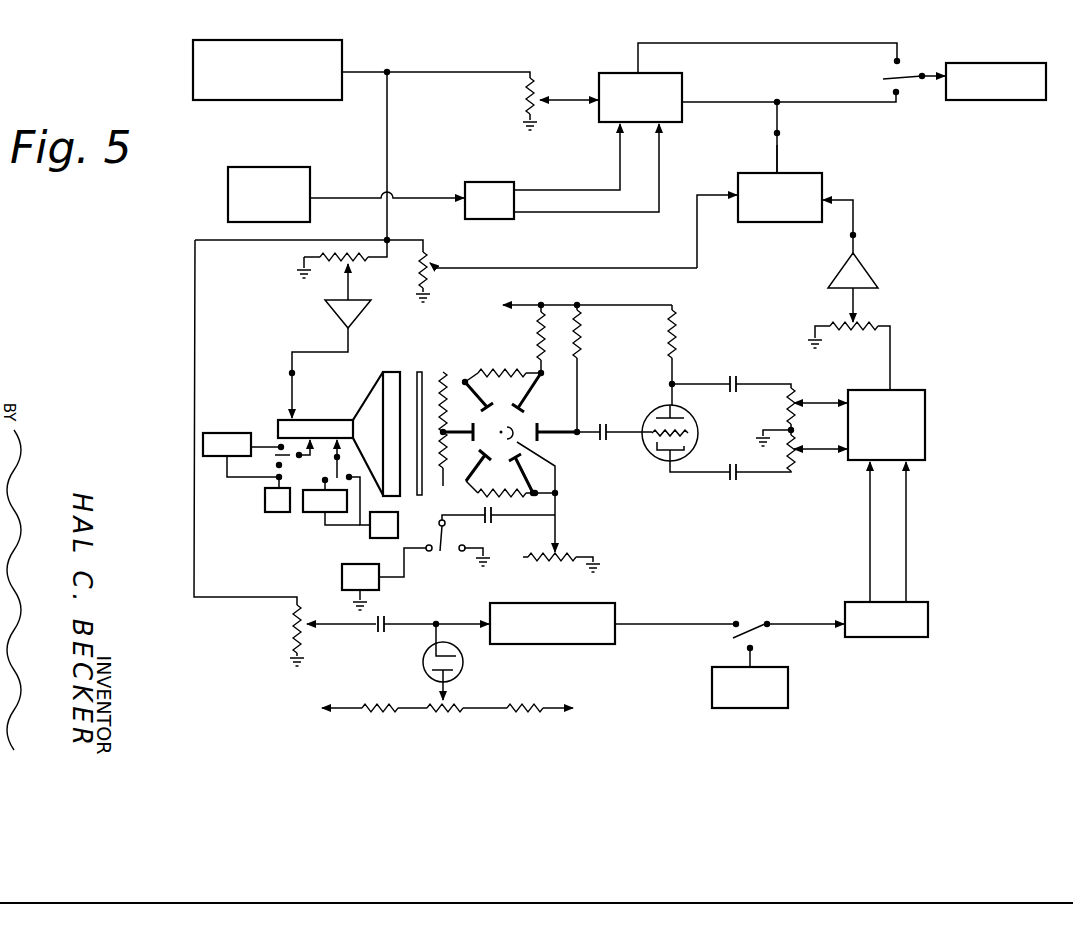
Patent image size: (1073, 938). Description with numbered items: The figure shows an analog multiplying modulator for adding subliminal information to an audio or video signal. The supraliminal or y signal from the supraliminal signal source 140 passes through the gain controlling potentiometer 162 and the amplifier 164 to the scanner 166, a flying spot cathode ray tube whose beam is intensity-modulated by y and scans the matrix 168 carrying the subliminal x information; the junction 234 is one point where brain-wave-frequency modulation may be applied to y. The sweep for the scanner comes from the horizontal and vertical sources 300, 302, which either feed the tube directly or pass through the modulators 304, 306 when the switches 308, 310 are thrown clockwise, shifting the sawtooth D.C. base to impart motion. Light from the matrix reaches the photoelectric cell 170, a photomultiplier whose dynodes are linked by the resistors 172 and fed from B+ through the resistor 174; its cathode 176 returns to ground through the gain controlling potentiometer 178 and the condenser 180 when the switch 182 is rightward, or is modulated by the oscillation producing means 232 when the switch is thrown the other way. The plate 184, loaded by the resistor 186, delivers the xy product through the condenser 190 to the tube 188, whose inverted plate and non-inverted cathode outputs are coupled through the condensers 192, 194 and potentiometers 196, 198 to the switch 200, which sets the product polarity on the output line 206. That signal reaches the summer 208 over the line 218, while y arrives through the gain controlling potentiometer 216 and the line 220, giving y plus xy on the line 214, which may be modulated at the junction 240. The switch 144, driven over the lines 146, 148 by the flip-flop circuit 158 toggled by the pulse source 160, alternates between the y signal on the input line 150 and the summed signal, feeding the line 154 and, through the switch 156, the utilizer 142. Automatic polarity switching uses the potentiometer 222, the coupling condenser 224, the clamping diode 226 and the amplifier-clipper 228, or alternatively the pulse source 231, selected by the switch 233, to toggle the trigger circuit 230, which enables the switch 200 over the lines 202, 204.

The supraliminal signal source 140 is at (306, 44).
The utilizer 142 is at (1008, 63).
The switch 144 is at (665, 73).
The line 146 is at (619, 166).
The line 148 is at (661, 171).
The input line 150 is at (566, 98).
The line 154 is at (807, 43).
The switch 156 is at (909, 70).
The flip-flop circuit 158 is at (507, 172).
The pulse source 160 is at (315, 162).
The gain controlling potentiometer 162 is at (292, 265).
The amplifier 164 is at (352, 318).
The scanner 166 is at (360, 406).
The matrix 168 is at (424, 371).
The photoelectric cell 170 is at (499, 353).
The resistor 172 is at (446, 395).
The resistor 174 is at (545, 312).
The cathode 176 is at (549, 456).
The gain controlling potentiometer 178 is at (561, 554).
The condenser 180 is at (488, 526).
The switch 182 is at (452, 566).
The plate 184 is at (538, 420).
The resistor 186 is at (581, 331).
The tube 188 is at (694, 420).
The condenser 190 is at (598, 424).
The condenser 192 is at (734, 372).
The condenser 194 is at (733, 485).
The potentiometer 196 is at (782, 404).
The potentiometer 198 is at (786, 466).
The switch 200 is at (926, 416).
The line 202 is at (868, 529).
The line 204 is at (907, 547).
The output line 206 is at (891, 366).
The summer 208 is at (823, 187).
The line 214 is at (779, 158).
The gain controlling potentiometer 216 is at (434, 262).
The line 218 is at (856, 219).
The line 220 is at (698, 253).
The potentiometer 222 is at (290, 612).
The coupling condenser 224 is at (380, 641).
The clamping diode 226 is at (464, 677).
The amplifier-clipper 228 is at (616, 606).
The trigger circuit 230 is at (871, 640).
The pulse source 231 is at (789, 695).
The oscillation producing means 232 is at (341, 578).
The switch 233 is at (752, 616).
The junction 234 is at (290, 377).
The junction 240 is at (780, 133).
The source 300 is at (264, 503).
The source 302 is at (372, 540).
The modulator 304 is at (220, 432).
The modulator 306 is at (312, 514).
The switch 308 is at (272, 450).
The switch 310 is at (336, 471).